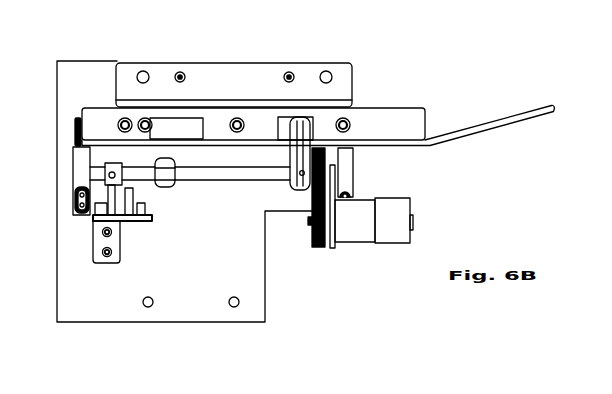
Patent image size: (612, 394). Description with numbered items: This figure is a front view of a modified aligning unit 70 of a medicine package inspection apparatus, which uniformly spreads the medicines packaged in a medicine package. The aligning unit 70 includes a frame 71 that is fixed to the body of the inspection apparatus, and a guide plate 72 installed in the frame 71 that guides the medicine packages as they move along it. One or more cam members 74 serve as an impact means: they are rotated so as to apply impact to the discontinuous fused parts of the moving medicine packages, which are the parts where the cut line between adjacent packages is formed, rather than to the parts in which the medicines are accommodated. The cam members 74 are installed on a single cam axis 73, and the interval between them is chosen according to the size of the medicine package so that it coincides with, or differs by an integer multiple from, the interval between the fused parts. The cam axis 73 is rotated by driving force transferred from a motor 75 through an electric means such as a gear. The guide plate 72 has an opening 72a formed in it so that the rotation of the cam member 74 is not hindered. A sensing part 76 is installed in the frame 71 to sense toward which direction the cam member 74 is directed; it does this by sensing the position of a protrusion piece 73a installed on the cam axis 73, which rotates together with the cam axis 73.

The aligning unit 70 is at (412, 36).
The frame 71 is at (194, 308).
The guide plate 72 is at (397, 146).
The opening 72a is at (181, 129).
The cam axis 73 is at (214, 179).
The protrusion piece 73a is at (105, 193).
The cam member 74 is at (157, 162).
The motor 75 is at (392, 241).
The sensing part 76 is at (98, 212).